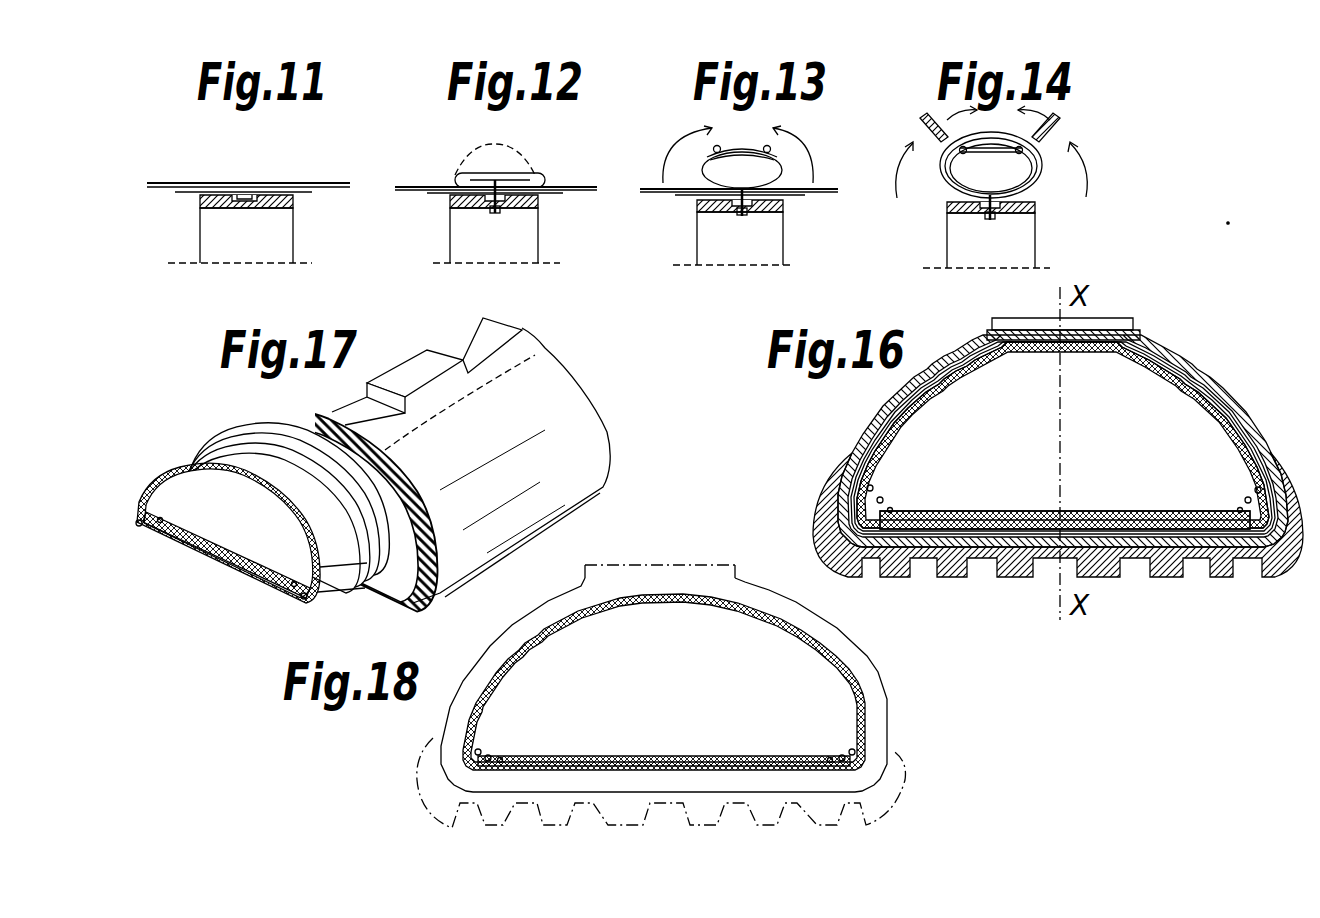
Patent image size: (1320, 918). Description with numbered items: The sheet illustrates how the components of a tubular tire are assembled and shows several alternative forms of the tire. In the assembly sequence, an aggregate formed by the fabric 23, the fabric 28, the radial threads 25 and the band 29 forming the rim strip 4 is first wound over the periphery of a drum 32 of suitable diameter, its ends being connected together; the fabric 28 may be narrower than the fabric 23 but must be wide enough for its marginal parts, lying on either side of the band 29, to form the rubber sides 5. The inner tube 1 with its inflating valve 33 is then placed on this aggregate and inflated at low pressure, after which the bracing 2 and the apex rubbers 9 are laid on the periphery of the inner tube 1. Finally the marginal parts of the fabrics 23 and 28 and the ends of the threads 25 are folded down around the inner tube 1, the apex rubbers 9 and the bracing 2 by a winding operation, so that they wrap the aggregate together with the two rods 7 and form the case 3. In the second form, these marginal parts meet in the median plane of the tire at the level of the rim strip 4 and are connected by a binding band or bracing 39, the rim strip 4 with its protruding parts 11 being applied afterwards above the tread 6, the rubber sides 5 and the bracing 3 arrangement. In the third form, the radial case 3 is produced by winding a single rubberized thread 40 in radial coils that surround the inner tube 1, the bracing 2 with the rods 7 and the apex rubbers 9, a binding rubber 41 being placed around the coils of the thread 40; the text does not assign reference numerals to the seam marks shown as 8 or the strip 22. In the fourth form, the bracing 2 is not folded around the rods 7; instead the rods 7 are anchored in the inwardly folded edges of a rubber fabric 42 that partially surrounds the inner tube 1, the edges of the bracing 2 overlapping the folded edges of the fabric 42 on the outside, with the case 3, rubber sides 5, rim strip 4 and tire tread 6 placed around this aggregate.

In FIG. 12, the inflatable tubular inner tube 1 is at (456, 179).
In FIG. 13, the inflatable tubular inner tube 1 is at (771, 181).
In FIG. 14, the inflatable tubular inner tube 1 is at (1010, 190).
In FIG. 17, the inflatable tubular inner tube 1 is at (180, 470).
In FIG. 18, the inflatable tubular inner tube 1 is at (664, 681).
In FIG. 13, the rigid bracing 2 is at (756, 150).
In FIG. 14, the rigid bracing 2 is at (986, 152).
In FIG. 17, the rigid bracing 2 is at (226, 557).
In FIG. 16, the rigid bracing 2 is at (1016, 512).
In FIG. 18, the rigid bracing 2 is at (600, 756).
In FIG. 17, the case 3 is at (262, 456).
In FIG. 16, the case 3 is at (1218, 385).
In FIG. 18, the case 3 is at (815, 640).
In FIG. 17, the rim strip 4 is at (515, 345).
In FIG. 16, the rim strip 4 is at (1042, 313).
In FIG. 18, the rim strip 4 is at (735, 582).
In FIG. 17, the side gums 5 is at (578, 402).
In FIG. 16, the side gums 5 is at (1264, 418).
In FIG. 17, the tire tread 6 is at (410, 600).
In FIG. 16, the tire tread 6 is at (1118, 570).
In FIG. 18, the tire tread 6 is at (705, 800).
In FIG. 17, the semi-rigid circular rods 7 is at (139, 528).
In FIG. 16, the semi-rigid circular rods 7 is at (882, 497).
In FIG. 18, the semi-rigid circular rods 7 is at (491, 756).
In FIG. 17, the weld seam 8 is at (162, 522).
In FIG. 16, the weld seam 8 is at (891, 508).
In FIG. 18, the weld seam 8 is at (502, 759).
In FIG. 13, the apex rubbers 9 is at (712, 152).
In FIG. 17, the apex rubbers 9 is at (137, 512).
In FIG. 16, the apex rubbers 9 is at (873, 486).
In FIG. 18, the apex rubbers 9 is at (479, 750).
In FIG. 17, the protruding parts 11 is at (432, 360).
In FIG. 16, the protruding parts 11 is at (1005, 318).
In FIG. 17, the bottom strip 22 is at (250, 570).
In FIG. 11, the fabric 23 is at (166, 186).
In FIG. 13, the fabric 23 is at (806, 189).
In FIG. 16, the fabric 23 is at (850, 470).
In FIG. 11, the threads 25 is at (170, 186).
In FIG. 13, the threads 25 is at (836, 193).
In FIG. 16, the threads 25 is at (858, 428).
In FIG. 11, the fabric 28 is at (189, 193).
In FIG. 13, the fabric 28 is at (798, 196).
In FIG. 16, the fabric 28 is at (868, 418).
In FIG. 11, the band 29 is at (246, 210).
In FIG. 11, the drum 32 is at (293, 230).
In FIG. 12, the drum 32 is at (538, 233).
In FIG. 13, the drum 32 is at (697, 235).
In FIG. 14, the drum 32 is at (947, 235).
In FIG. 12, the inflating valve 33 is at (494, 214).
In FIG. 13, the inflating valve 33 is at (742, 217).
In FIG. 14, the inflating valve 33 is at (992, 219).
In FIG. 16, the bracing 39 is at (1030, 333).
In FIG. 17, the rubberized thread 40 is at (283, 497).
In FIG. 17, the binding rubber 41 is at (283, 497).
In FIG. 18, the rubber fabric 42 is at (526, 630).